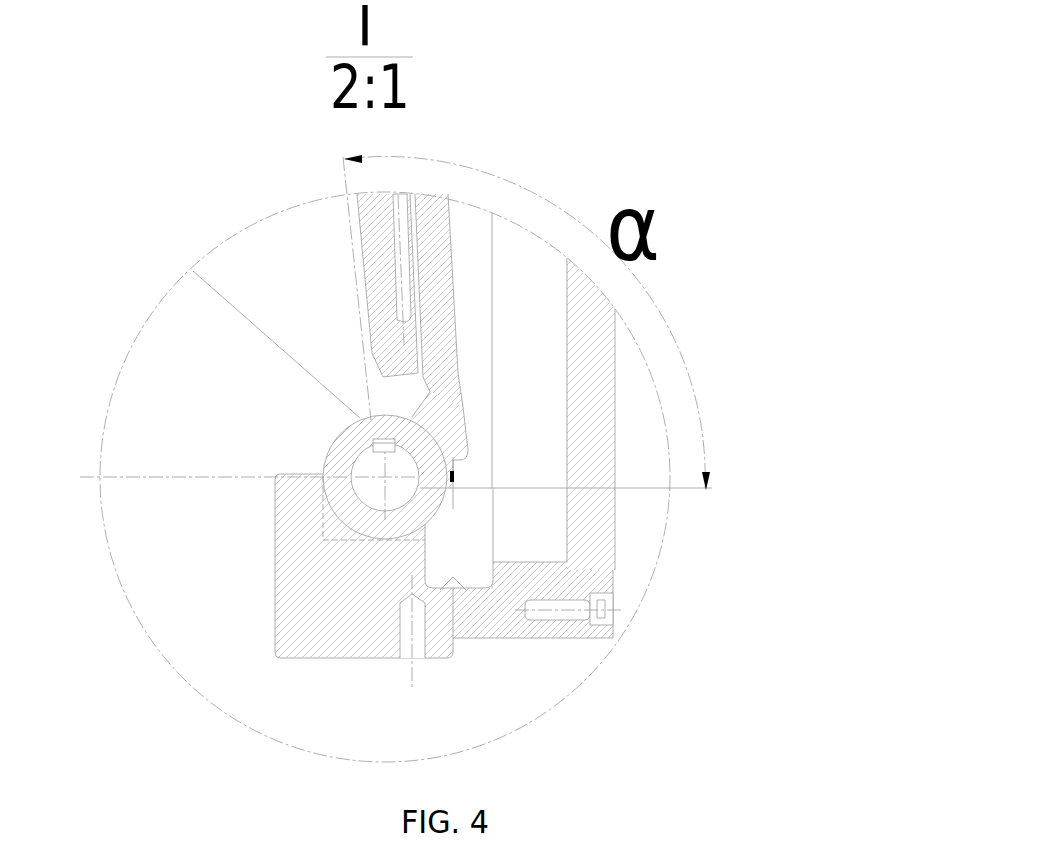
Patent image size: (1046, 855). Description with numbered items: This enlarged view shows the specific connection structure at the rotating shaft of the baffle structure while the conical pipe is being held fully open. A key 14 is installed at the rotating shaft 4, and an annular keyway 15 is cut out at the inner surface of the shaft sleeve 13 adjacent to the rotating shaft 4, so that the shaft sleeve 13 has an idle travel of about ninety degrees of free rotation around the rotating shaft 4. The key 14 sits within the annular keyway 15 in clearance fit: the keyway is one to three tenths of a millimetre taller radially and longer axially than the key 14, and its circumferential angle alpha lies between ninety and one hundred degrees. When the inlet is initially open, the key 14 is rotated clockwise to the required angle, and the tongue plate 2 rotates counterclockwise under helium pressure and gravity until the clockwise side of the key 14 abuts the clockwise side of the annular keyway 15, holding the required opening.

The tongue plate 2 is at (383, 288).
The rotating shaft 4 is at (403, 471).
The shaft sleeve 13 is at (423, 508).
The key 14 is at (413, 427).
The annular keyway 15 is at (430, 448).